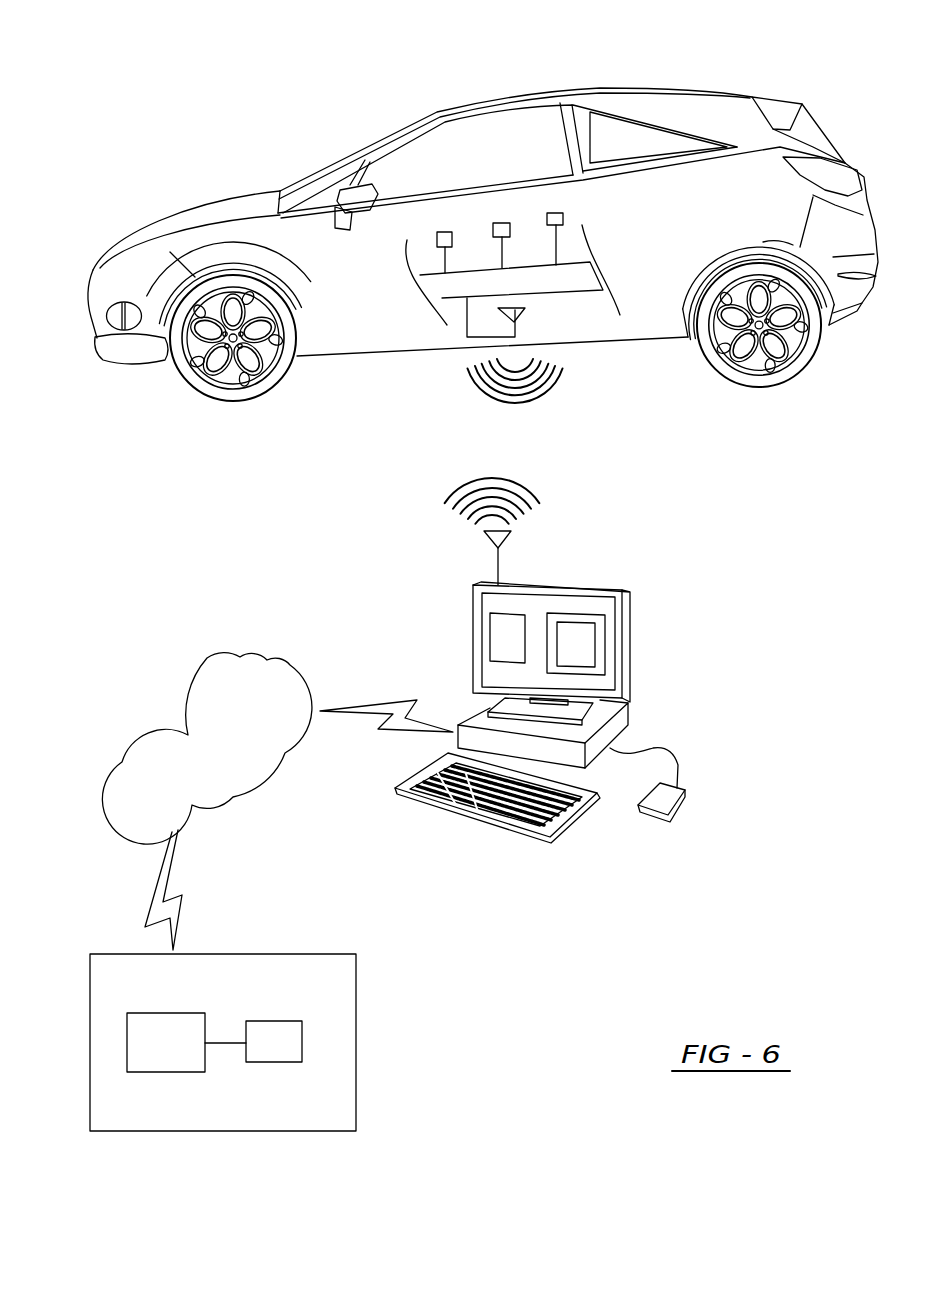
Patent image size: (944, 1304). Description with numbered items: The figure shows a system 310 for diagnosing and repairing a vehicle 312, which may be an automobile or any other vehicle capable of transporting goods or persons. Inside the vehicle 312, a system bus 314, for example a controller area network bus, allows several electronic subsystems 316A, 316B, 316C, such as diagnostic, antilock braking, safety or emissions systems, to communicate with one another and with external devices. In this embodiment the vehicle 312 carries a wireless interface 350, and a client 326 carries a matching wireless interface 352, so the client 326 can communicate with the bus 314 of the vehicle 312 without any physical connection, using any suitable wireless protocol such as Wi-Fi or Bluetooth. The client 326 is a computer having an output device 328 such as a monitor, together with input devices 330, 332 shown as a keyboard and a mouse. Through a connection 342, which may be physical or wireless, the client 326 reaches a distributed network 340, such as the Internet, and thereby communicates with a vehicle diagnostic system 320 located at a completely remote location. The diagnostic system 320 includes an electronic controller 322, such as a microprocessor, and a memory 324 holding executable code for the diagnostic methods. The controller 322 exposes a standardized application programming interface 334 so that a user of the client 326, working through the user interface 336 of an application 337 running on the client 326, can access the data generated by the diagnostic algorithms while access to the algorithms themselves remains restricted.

The system for diagnosing and repairing a vehicle 310 is at (143, 135).
The vehicle 312 is at (680, 83).
The system bus 314 is at (537, 278).
The electronic subsystem 316A is at (445, 230).
The electronic subsystem 316B is at (497, 222).
The electronic subsystem 316C is at (552, 212).
The vehicle diagnostic system 320 is at (356, 1096).
The electronic controller 322 is at (172, 1062).
The memory 324 is at (297, 1042).
The client 326 is at (627, 723).
The output device 328 is at (632, 650).
The input device 330 is at (473, 817).
The input device 332 is at (645, 818).
The application programming interface 334 is at (488, 637).
The user interface 336 is at (582, 642).
The application 337 is at (570, 613).
The distributed network 340 is at (208, 659).
The connection 342 is at (382, 700).
The wireless interface 350 is at (523, 318).
The wireless interface 352 is at (490, 538).